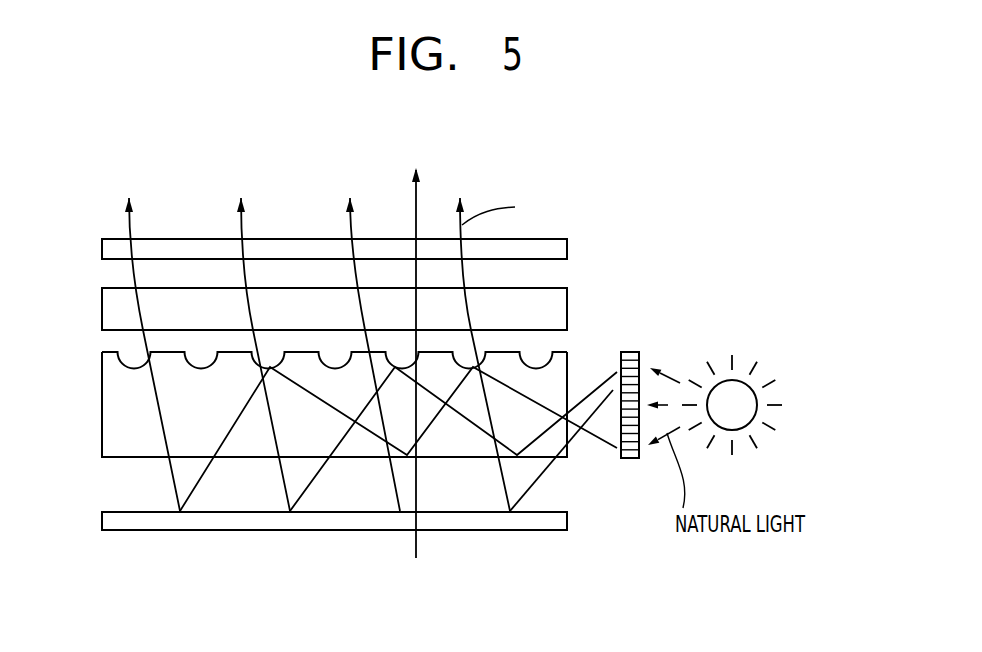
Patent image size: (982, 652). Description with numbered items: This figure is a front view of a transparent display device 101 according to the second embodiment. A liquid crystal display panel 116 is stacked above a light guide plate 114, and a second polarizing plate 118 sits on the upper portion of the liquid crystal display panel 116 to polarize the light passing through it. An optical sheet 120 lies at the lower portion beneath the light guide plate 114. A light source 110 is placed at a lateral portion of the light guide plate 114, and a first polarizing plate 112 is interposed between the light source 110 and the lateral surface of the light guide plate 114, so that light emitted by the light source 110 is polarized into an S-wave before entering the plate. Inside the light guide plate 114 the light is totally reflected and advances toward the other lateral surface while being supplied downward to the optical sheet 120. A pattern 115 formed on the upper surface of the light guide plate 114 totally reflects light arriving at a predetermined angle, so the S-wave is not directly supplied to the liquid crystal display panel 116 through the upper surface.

The transparent display device 101 is at (610, 182).
The light source 110 is at (747, 402).
The first polarizing plate 112 is at (630, 458).
The light guide plate 114 is at (335, 391).
The pattern 115 is at (540, 366).
The liquid crystal display panel 116 is at (562, 313).
The second polarizing plate 118 is at (562, 252).
The optical sheet 120 is at (548, 524).